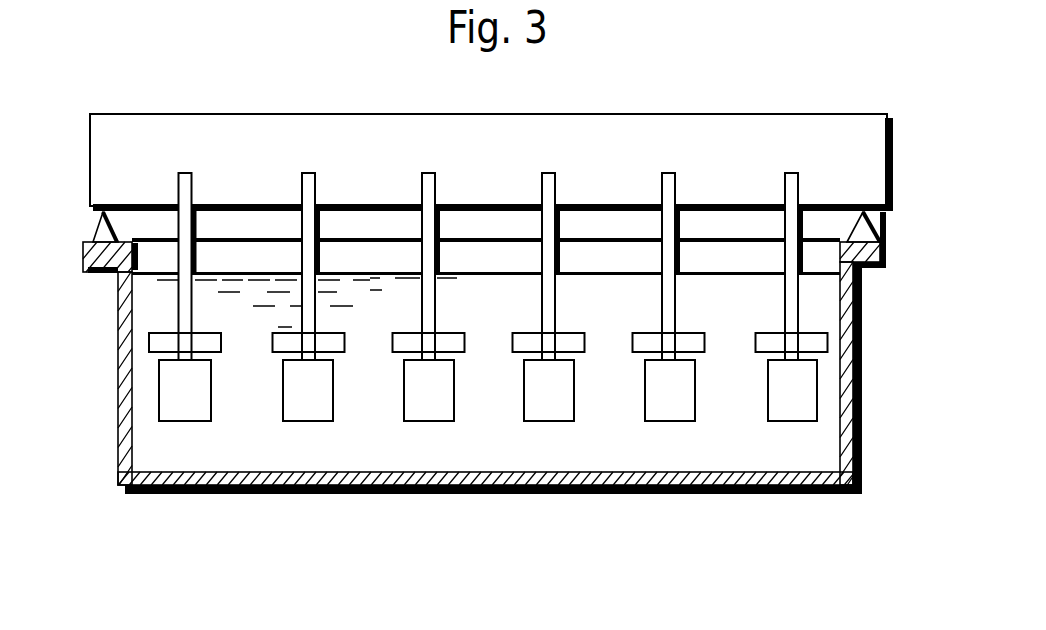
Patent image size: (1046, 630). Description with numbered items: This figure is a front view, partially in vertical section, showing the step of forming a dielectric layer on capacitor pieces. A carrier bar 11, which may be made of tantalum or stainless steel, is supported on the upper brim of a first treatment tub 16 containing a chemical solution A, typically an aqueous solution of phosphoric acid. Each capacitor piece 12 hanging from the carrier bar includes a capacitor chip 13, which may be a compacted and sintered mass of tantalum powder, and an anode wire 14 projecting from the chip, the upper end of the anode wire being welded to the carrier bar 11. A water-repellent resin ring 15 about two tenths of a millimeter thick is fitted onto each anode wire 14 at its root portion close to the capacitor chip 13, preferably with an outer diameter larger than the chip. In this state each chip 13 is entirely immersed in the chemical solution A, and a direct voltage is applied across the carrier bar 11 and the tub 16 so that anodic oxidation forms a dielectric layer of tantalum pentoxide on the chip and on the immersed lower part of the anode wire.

The carrier bar 11 is at (673, 125).
The capacitor piece 12 is at (146, 410).
The capacitor chip 13 is at (187, 412).
The anode wire 14 is at (183, 292).
The water-repellent resin ring 15 is at (152, 340).
The first treatment tub 16 is at (287, 493).
The chemical solution A is at (482, 450).